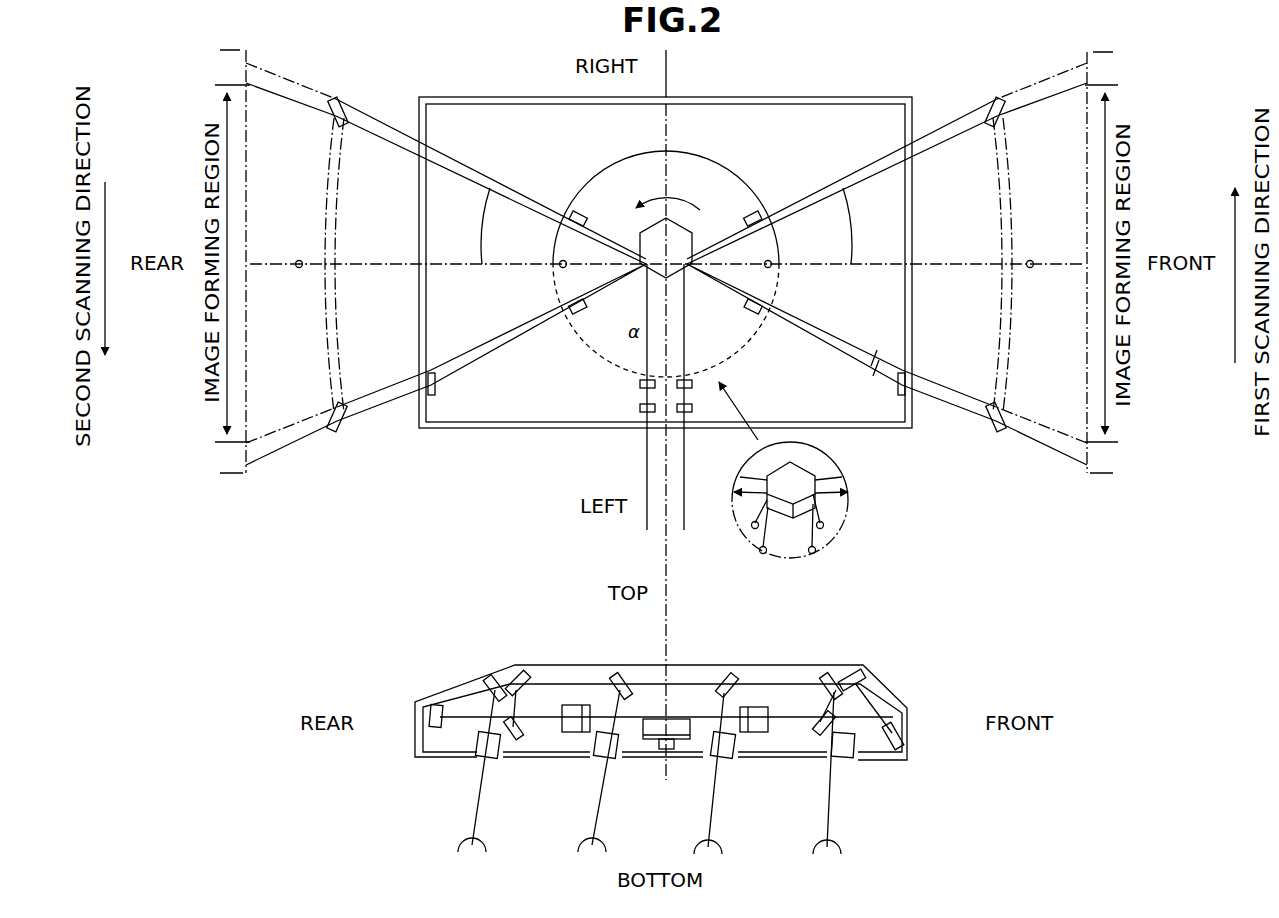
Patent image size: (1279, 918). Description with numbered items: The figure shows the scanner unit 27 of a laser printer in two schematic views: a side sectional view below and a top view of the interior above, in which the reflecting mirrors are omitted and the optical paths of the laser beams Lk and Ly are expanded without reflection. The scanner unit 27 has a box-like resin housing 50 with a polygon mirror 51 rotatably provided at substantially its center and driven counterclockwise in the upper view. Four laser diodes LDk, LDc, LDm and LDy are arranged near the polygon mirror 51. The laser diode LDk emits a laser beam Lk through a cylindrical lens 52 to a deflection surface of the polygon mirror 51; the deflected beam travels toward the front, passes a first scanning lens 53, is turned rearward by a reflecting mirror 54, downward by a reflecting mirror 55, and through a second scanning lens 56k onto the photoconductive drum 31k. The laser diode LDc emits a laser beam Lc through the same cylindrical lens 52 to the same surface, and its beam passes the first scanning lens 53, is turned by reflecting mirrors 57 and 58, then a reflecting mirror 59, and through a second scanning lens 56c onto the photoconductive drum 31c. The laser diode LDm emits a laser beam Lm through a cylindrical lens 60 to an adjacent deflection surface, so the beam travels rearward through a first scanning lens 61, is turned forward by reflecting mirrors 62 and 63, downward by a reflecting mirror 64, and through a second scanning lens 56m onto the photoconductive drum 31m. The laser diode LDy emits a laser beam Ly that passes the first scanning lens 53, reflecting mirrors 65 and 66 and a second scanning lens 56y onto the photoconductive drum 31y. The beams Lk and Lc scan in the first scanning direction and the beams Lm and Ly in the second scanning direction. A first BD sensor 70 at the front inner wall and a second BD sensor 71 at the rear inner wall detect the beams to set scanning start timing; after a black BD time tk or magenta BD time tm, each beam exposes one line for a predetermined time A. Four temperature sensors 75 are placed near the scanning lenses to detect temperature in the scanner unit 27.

The scanner unit 27 is at (898, 62).
The housing 50 is at (822, 98).
The polygon mirror 51 is at (690, 233).
The cylindrical lens 52 is at (692, 383).
The first scanning lens 53 is at (752, 213).
The reflecting mirror 54 is at (902, 735).
The reflecting mirror 55 is at (858, 672).
The second scanning lens 56y is at (342, 426).
The second scanning lens 56m is at (608, 760).
The second scanning lens 56c is at (720, 760).
The second scanning lens 56k is at (990, 426).
The reflecting mirror 57 is at (820, 735).
The reflecting mirror 58 is at (832, 672).
The reflecting mirror 59 is at (722, 674).
The cylindrical lens 60 is at (640, 385).
The first scanning lens 61 is at (585, 212).
The reflecting mirror 62 is at (512, 740).
The reflecting mirror 63 is at (518, 672).
The reflecting mirror 64 is at (622, 674).
The reflecting mirror 65 is at (430, 718).
The reflecting mirror 66 is at (494, 676).
The first BD sensor 70 is at (905, 397).
The second BD sensor 71 is at (427, 397).
The temperature sensor 75 is at (299, 260).
The photoconductive drum 31y is at (246, 473).
The photoconductive drum 31m is at (596, 845).
The photoconductive drum 31c is at (712, 847).
The photoconductive drum 31k is at (1087, 473).
The laser beam Ly is at (352, 112).
The laser beam Lm is at (600, 808).
The laser beam Lc is at (713, 812).
The laser beam Lk is at (983, 112).
The laser diode LDy is at (763, 547).
The laser diode LDm is at (640, 408).
The laser diode LDc is at (815, 548).
The laser diode LDk is at (692, 410).
The magenta BD time tm is at (722, 148).
The black BD time tk is at (872, 362).
The predetermined time A is at (668, 226).